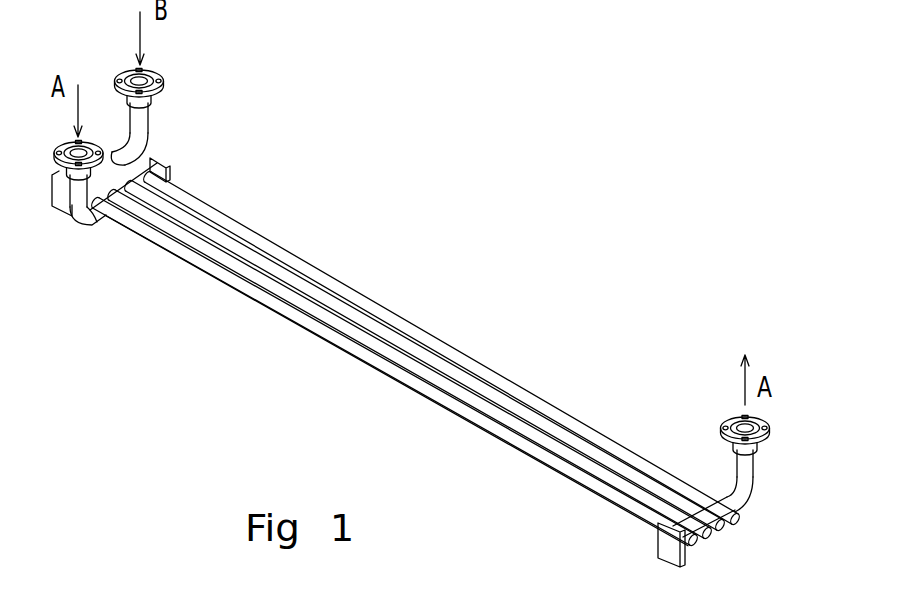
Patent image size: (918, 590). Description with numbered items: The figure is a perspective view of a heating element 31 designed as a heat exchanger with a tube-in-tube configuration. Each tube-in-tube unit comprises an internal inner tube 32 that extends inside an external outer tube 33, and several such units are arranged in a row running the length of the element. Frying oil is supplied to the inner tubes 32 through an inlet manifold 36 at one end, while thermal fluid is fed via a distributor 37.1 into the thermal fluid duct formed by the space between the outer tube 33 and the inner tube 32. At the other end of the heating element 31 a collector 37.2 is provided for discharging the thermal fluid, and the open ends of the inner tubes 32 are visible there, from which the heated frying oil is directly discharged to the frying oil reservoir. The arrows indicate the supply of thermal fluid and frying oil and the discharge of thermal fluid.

The heating element 31 is at (398, 277).
The inner tube 32 is at (742, 517).
The outer tube 33 is at (572, 475).
The inlet manifold 36 is at (120, 155).
The distributor 37.1 is at (167, 170).
The collector 37.2 is at (727, 497).